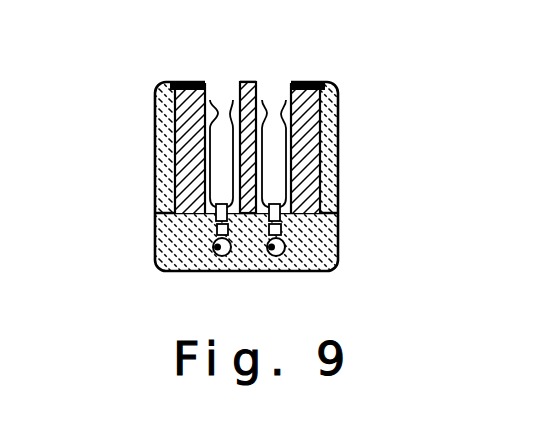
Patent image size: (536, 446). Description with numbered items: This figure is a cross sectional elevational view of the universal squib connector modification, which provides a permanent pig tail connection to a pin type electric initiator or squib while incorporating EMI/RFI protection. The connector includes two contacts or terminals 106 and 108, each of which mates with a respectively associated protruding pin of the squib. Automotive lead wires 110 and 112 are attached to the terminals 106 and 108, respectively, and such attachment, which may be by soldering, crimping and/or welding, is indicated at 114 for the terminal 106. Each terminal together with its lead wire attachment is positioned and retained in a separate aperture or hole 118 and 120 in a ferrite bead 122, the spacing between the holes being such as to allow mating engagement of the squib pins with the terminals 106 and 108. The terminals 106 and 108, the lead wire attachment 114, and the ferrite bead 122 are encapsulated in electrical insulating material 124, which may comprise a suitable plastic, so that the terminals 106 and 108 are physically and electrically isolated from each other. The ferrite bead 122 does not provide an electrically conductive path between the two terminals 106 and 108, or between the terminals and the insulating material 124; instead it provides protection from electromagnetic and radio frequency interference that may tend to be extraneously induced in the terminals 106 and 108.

The contact or terminal 106 is at (158, 101).
The contact or terminal 108 is at (319, 99).
The automotive lead wire 110 is at (285, 244).
The automotive lead wire 112 is at (213, 249).
The lead wire attachment 114 is at (216, 213).
The aperture or hole 118 is at (217, 81).
The aperture or hole 120 is at (268, 81).
The ferrite bead 122 is at (337, 132).
The electrical insulating material 124 is at (156, 142).